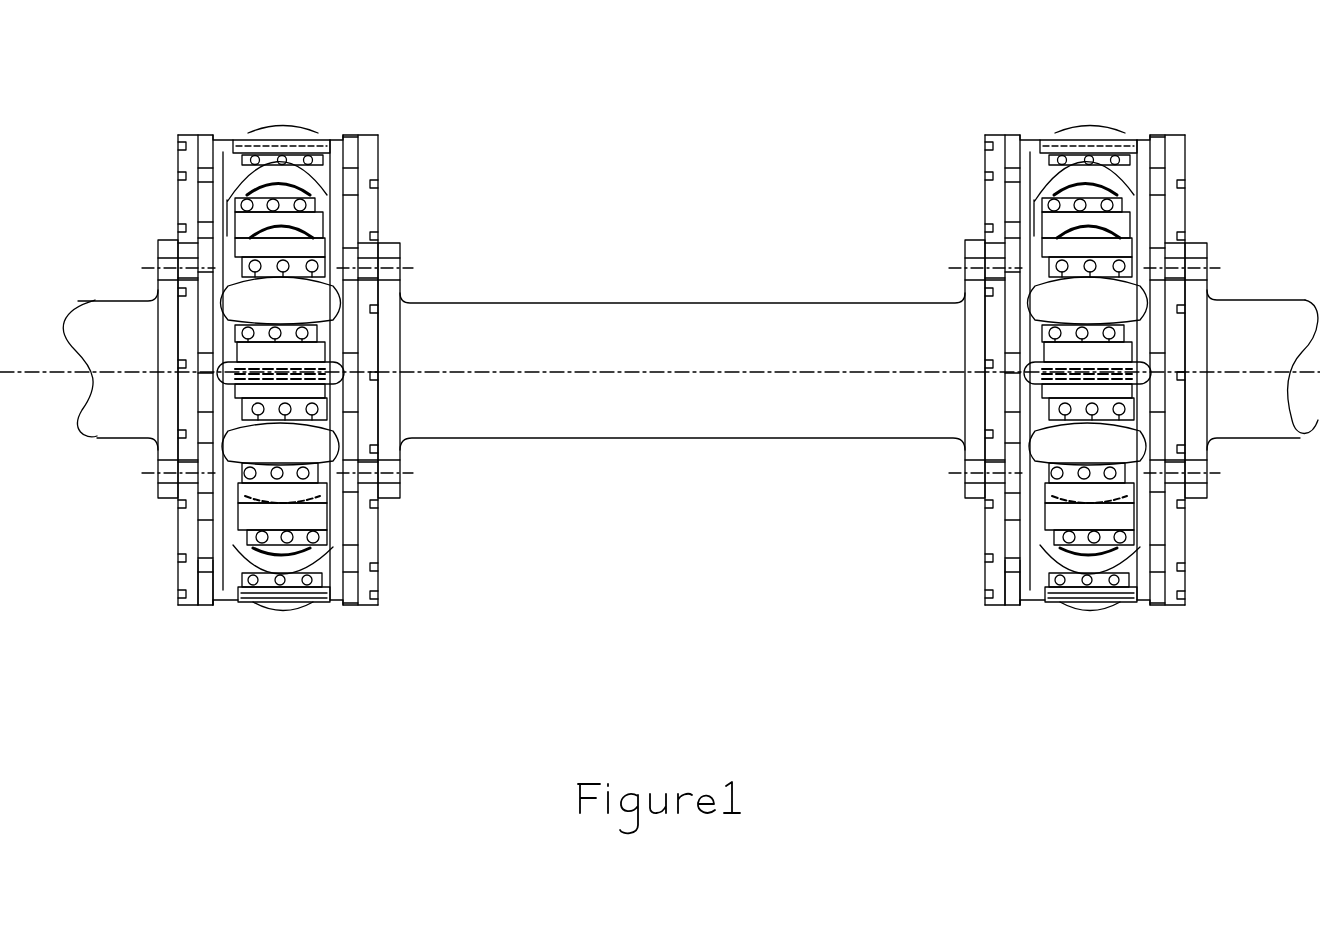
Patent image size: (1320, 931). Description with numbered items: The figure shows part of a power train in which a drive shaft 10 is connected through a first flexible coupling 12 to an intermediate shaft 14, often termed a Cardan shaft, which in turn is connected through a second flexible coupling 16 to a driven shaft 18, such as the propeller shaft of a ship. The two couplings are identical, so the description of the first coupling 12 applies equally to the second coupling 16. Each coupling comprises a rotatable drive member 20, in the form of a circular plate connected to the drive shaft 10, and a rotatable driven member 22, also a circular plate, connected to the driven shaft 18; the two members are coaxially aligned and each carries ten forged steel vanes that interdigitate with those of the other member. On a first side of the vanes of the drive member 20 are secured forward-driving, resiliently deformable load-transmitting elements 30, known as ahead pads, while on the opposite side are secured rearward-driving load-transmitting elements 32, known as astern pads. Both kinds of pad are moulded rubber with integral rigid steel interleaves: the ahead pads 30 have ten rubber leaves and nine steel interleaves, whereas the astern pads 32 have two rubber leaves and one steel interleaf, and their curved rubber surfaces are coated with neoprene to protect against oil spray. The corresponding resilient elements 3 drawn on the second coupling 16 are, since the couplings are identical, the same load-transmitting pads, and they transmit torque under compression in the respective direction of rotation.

The bearing 3 is at (247, 382).
The drive shaft 10 is at (690, 337).
The first flexible coupling 12 is at (1133, 354).
The intermediate shaft 14 is at (682, 330).
The second flexible coupling 16 is at (247, 327).
The driven shaft 18 is at (552, 367).
The drive member 20 is at (797, 457).
The driven member 22 is at (585, 628).
The forward-driving load-transmitting elements 30 is at (1155, 404).
The rearward-driving load-transmitting elements 32 is at (1148, 352).